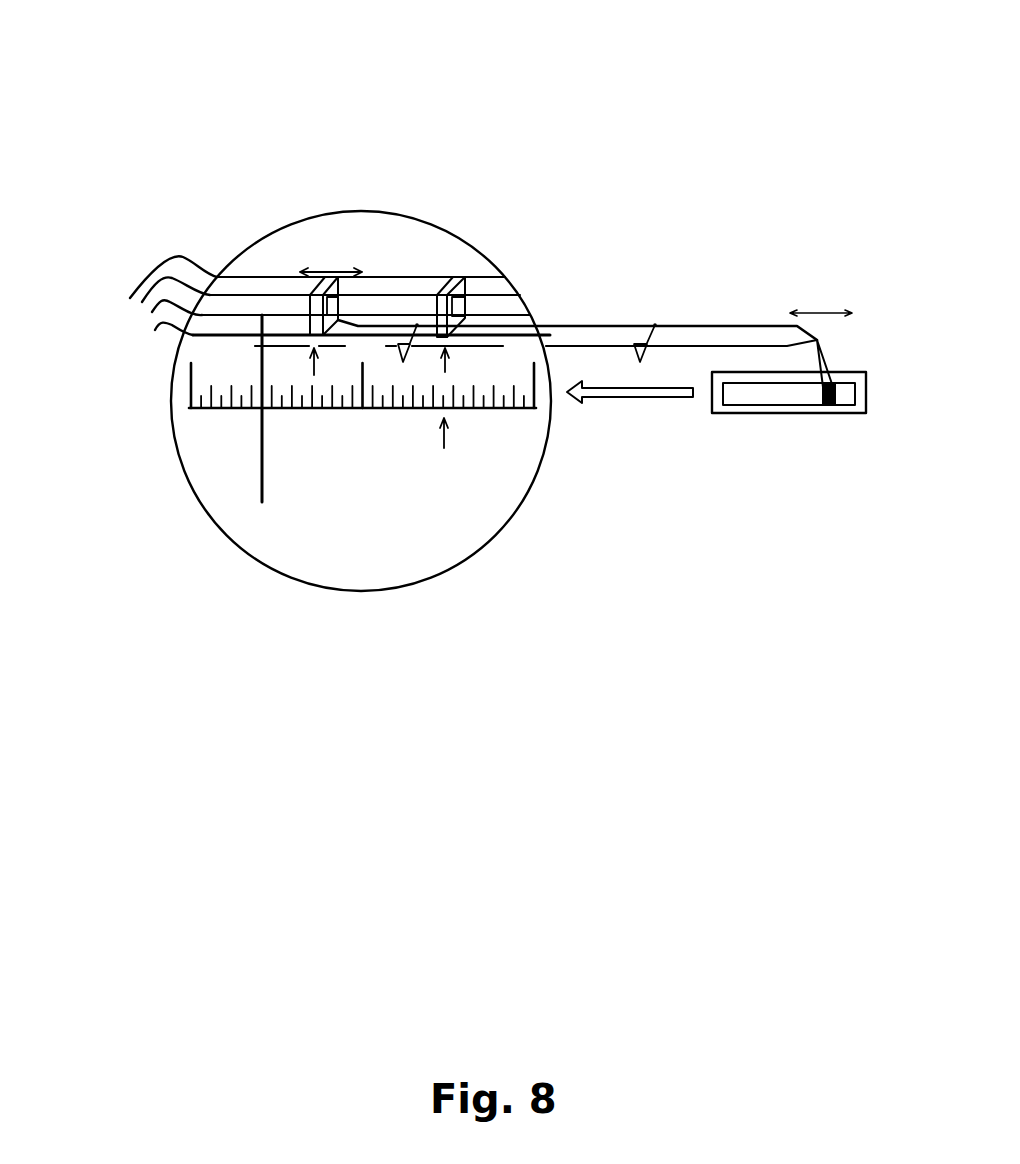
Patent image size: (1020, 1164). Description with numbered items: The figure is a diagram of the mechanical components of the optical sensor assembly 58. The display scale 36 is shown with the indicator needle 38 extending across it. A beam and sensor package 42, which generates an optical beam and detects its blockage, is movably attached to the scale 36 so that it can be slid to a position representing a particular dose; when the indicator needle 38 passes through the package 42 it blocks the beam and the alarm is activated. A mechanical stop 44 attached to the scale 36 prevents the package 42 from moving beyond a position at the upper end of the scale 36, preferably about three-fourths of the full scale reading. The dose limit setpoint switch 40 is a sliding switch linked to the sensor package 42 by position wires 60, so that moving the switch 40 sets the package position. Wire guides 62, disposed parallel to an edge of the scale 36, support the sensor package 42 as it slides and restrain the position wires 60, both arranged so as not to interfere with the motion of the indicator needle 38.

The scale 36 is at (508, 410).
The indicator needle 38 is at (254, 470).
The dose limit setpoint switch 40 is at (793, 415).
The beam and sensor package 42 is at (312, 293).
The mechanical stop 44 is at (453, 277).
The optical sensor assembly 58 is at (377, 213).
The position wires 60 is at (607, 346).
The wire guides 62 is at (146, 309).